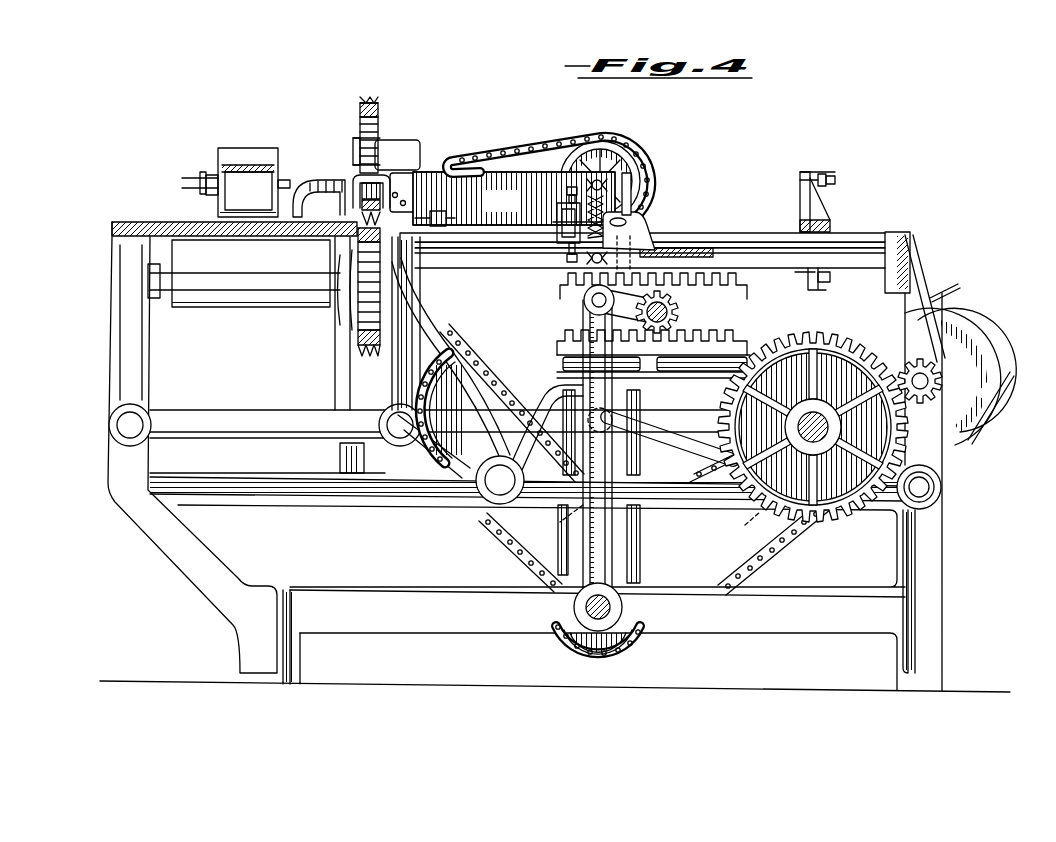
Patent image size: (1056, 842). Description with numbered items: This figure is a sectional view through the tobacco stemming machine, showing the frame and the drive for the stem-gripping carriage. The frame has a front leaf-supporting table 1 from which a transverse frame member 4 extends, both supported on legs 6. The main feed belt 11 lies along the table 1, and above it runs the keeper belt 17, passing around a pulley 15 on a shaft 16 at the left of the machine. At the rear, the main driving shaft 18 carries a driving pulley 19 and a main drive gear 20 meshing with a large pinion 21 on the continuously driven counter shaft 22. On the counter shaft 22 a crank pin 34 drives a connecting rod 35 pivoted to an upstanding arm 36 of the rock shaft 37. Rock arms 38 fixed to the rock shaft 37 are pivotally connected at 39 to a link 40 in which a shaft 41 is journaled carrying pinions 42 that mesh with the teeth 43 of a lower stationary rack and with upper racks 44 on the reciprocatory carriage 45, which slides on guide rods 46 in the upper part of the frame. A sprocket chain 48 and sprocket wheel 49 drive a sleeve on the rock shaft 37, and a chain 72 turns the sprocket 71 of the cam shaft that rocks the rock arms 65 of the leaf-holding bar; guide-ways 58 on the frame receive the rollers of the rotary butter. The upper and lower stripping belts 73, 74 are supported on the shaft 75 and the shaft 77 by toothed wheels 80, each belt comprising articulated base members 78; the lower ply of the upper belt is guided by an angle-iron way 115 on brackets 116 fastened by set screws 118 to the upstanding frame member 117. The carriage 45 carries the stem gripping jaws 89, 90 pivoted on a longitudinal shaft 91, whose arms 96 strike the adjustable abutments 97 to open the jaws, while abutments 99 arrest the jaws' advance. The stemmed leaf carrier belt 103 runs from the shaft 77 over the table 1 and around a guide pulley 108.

The front leaf-supporting table 1 is at (143, 222).
The transverse frame member 4 is at (875, 232).
The legs 6 is at (193, 563).
The main feed belt 11 is at (192, 222).
The pulley 15 is at (248, 182).
The shaft 16 is at (192, 178).
The keeper belt 17 is at (245, 148).
The main driving shaft 18 is at (925, 381).
The driving pulley 19 is at (972, 343).
The main drive gear 20 is at (910, 362).
The large pinion 21 is at (845, 345).
The counter shaft 22 is at (820, 418).
The crank pin 34 is at (748, 527).
The connecting rod 35 is at (683, 436).
The upstanding arm 36 is at (560, 522).
The rock shaft 37 is at (586, 611).
The rock arms 38 is at (583, 314).
The pivotal connection 39 is at (584, 299).
The link 40 is at (650, 312).
The shaft 41 is at (668, 306).
The pinions 42 is at (680, 334).
The teeth of lower fixed rack 43 is at (730, 338).
The upper racks 44 is at (747, 292).
The reciprocatory carriage 45 is at (677, 248).
The guide rods 46 is at (490, 262).
The sprocket chain 48 is at (775, 548).
The sprocket wheel 49 is at (640, 573).
The guide-ways 58 is at (514, 198).
The rock arms 65 is at (318, 180).
The sprocket 71 is at (565, 448).
The chain 72 is at (505, 538).
The stripping belt 73 is at (368, 96).
The stripping belt 74 is at (369, 357).
The shaft 75 is at (353, 150).
The shaft 77 is at (287, 283).
The base members 78 is at (358, 338).
The toothed wheels 80 is at (380, 148).
The stem gripping jaw 89 is at (558, 207).
The stem gripping jaw 90 is at (565, 243).
The longitudinal shaft 91 is at (643, 216).
The arms 96 is at (633, 190).
The adjustable fixed abutments 97 is at (800, 178).
The abutments 99 is at (438, 226).
The stemmed leaf carrier belt 103 is at (345, 392).
The guide pulley 108 is at (340, 460).
The angle-iron way 115 is at (397, 155).
The brackets 116 is at (353, 205).
The upstanding frame member 117 is at (433, 165).
The set screws 118 is at (398, 199).